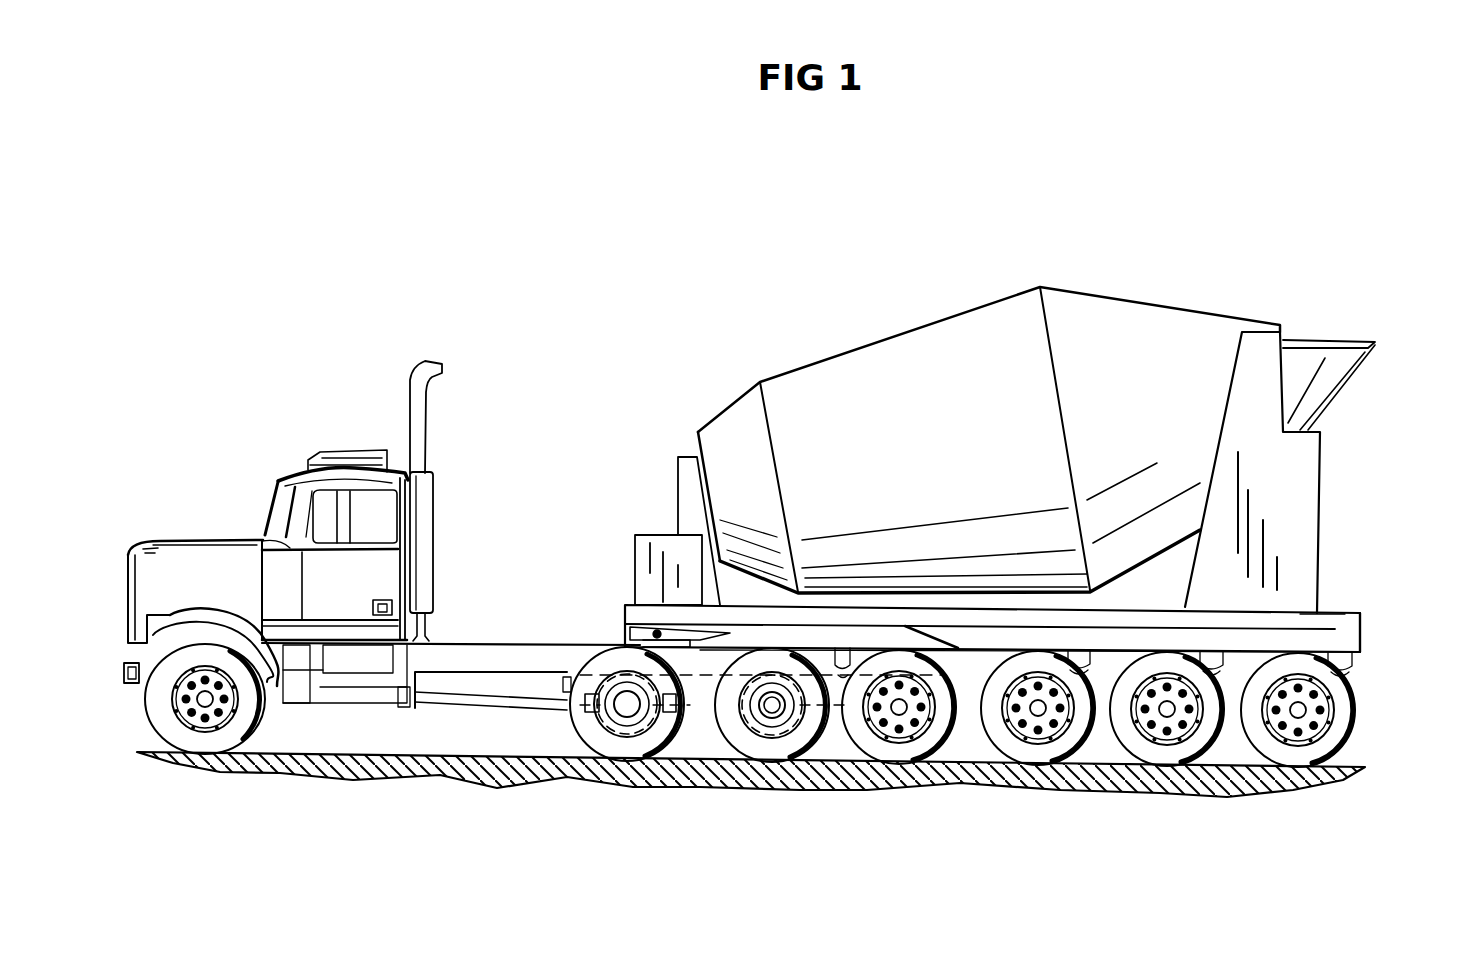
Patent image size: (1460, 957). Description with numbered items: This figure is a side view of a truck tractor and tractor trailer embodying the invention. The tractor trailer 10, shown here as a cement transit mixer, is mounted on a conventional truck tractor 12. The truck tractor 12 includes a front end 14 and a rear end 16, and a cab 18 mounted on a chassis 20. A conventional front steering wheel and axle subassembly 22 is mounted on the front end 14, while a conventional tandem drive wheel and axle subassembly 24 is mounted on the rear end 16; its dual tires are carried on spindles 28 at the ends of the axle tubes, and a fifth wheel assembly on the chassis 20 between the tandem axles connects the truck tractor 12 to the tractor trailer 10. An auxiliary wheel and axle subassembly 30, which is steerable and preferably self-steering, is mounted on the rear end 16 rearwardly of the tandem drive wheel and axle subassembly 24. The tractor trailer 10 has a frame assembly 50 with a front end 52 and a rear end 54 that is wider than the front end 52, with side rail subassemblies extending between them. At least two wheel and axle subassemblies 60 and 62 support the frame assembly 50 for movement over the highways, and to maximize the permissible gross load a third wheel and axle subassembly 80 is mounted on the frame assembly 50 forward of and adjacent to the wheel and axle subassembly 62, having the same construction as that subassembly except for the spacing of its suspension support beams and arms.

The tractor trailer 10 is at (717, 402).
The truck tractor 12 is at (247, 517).
The front end 14 is at (133, 683).
The rear end 16 is at (847, 660).
The cab 18 is at (187, 556).
The chassis 20 is at (447, 653).
The front steering wheel and axle subassembly 22 is at (210, 738).
The tandem drive wheel and axle subassembly 24 is at (735, 727).
The spindles 28 is at (781, 722).
The auxiliary wheel and axle subassembly 30 is at (885, 750).
The frame assembly 50 is at (958, 632).
The front end 52 is at (633, 612).
The rear end 54 is at (1347, 630).
The wheel and axle subassembly 60 is at (1280, 748).
The wheel and axle subassembly 62 is at (1150, 748).
The third wheel and axle subassembly 80 is at (1022, 748).